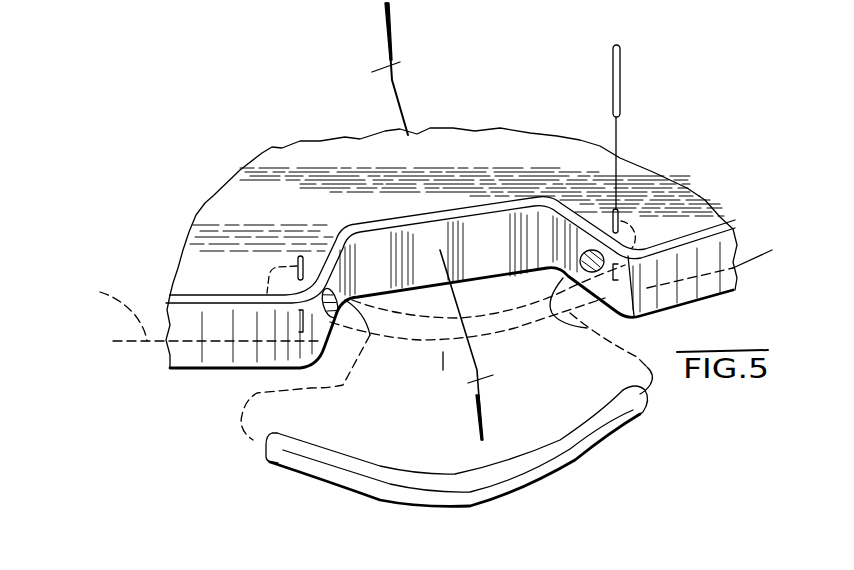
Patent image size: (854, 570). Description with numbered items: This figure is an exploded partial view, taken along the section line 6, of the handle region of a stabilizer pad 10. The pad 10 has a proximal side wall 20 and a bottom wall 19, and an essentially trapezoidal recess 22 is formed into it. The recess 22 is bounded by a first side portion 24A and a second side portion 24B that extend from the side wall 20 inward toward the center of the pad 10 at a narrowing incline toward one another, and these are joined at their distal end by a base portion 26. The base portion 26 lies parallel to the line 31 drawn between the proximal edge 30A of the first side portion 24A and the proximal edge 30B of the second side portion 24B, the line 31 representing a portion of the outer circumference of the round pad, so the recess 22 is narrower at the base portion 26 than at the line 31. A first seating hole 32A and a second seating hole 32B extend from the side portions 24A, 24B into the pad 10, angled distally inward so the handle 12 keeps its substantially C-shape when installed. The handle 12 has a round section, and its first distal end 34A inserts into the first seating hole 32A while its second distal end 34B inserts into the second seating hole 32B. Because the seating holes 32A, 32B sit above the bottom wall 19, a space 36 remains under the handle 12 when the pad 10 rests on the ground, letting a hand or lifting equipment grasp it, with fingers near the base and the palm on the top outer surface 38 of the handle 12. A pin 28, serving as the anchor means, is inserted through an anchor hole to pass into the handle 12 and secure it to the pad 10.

The section line 6- 6 is at (428, 221).
The pad 10 is at (265, 158).
The handle 12 is at (328, 187).
The bottom wall 19 is at (215, 368).
The side wall 20 is at (182, 353).
The recess 22 is at (487, 287).
The first side portion 24A is at (337, 270).
The second side portion 24B is at (598, 240).
The base portion 26 is at (427, 237).
The pin 28 is at (613, 80).
The proximal edge of first side portion 30A is at (343, 314).
The proximal edge of second side portion 30B is at (650, 315).
The line 31 is at (198, 312).
The first seating hole 32A is at (337, 317).
The second seating hole 32B is at (593, 273).
The first distal end 34A is at (290, 448).
The second distal end 34B is at (623, 398).
The space 36 is at (443, 353).
The top outer surface 38 is at (458, 485).